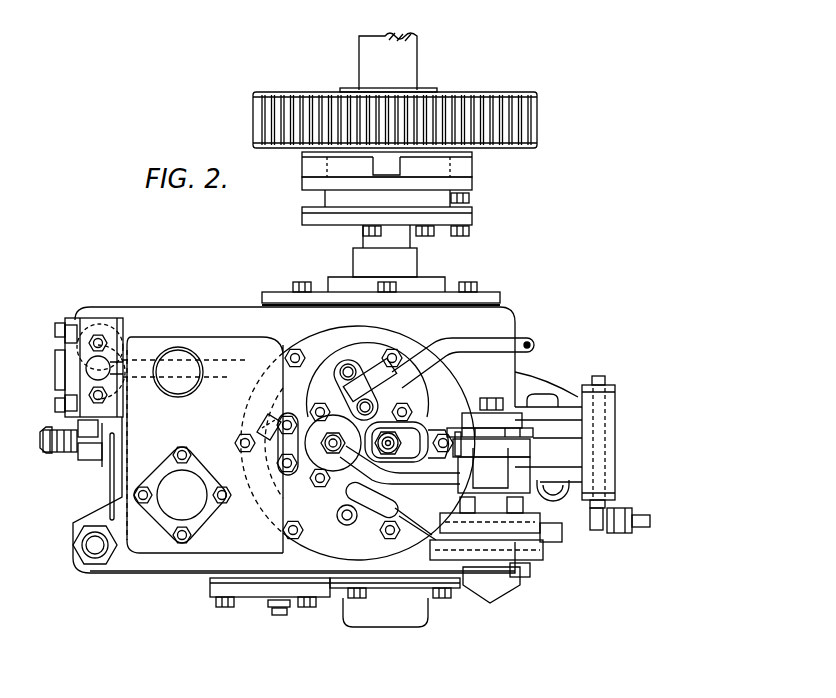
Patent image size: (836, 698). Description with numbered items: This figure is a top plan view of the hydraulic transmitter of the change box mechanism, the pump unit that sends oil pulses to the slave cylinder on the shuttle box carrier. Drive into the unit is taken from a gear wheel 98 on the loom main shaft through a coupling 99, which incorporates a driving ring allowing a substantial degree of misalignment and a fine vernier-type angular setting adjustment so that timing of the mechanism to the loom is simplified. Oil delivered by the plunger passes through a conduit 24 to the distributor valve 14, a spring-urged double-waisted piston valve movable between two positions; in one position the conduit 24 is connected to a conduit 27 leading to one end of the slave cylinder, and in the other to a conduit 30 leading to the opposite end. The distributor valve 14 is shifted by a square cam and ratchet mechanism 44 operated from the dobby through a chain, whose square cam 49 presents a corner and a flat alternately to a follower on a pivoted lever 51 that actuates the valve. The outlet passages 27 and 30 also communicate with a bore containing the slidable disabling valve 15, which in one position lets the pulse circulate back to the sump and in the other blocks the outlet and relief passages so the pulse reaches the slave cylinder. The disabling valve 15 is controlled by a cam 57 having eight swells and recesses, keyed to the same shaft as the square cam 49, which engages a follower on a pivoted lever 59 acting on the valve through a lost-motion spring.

The gear wheel 98 is at (517, 117).
The coupling 99 is at (483, 157).
The conduit 24 is at (142, 368).
The distributor valve 14 is at (313, 465).
The conduit 27 is at (505, 345).
The disabling valve 15 is at (412, 427).
The pivoted lever 59 is at (547, 417).
The cam 57 is at (525, 432).
The square cam 49 is at (520, 443).
The conduit 30 is at (392, 512).
The square cam and ratchet mechanism 44 is at (503, 592).
The pivoted lever 51 is at (428, 475).